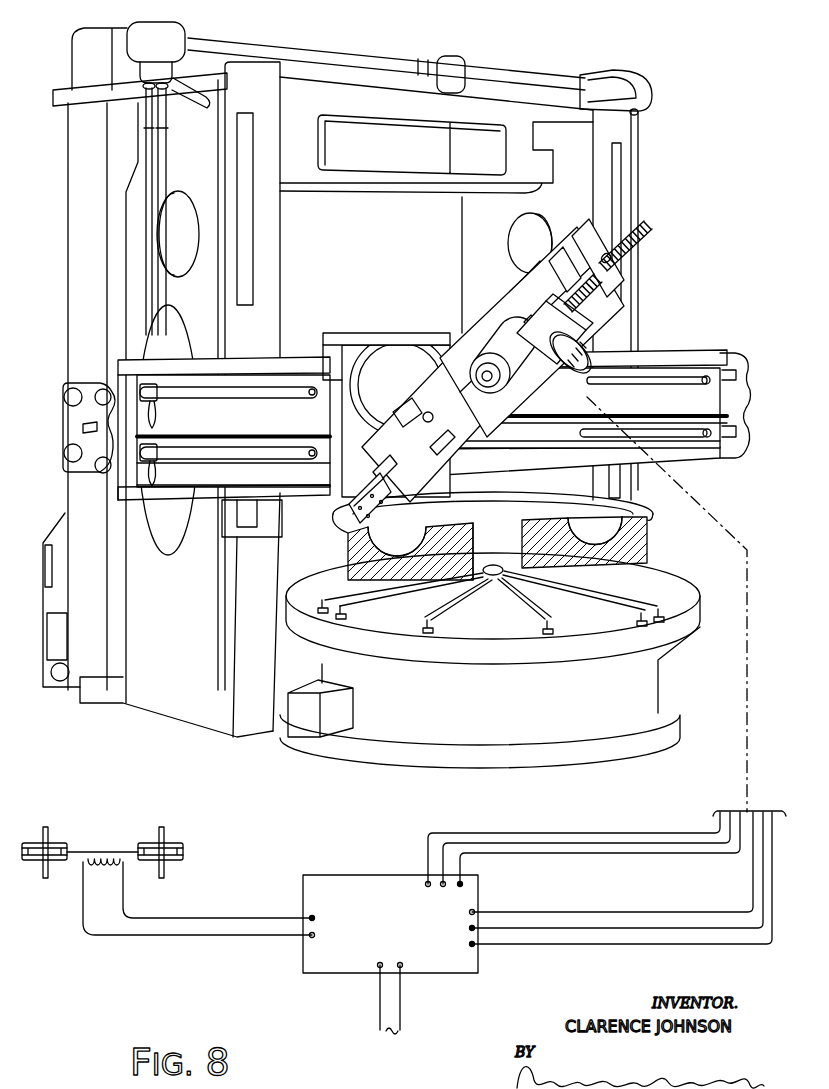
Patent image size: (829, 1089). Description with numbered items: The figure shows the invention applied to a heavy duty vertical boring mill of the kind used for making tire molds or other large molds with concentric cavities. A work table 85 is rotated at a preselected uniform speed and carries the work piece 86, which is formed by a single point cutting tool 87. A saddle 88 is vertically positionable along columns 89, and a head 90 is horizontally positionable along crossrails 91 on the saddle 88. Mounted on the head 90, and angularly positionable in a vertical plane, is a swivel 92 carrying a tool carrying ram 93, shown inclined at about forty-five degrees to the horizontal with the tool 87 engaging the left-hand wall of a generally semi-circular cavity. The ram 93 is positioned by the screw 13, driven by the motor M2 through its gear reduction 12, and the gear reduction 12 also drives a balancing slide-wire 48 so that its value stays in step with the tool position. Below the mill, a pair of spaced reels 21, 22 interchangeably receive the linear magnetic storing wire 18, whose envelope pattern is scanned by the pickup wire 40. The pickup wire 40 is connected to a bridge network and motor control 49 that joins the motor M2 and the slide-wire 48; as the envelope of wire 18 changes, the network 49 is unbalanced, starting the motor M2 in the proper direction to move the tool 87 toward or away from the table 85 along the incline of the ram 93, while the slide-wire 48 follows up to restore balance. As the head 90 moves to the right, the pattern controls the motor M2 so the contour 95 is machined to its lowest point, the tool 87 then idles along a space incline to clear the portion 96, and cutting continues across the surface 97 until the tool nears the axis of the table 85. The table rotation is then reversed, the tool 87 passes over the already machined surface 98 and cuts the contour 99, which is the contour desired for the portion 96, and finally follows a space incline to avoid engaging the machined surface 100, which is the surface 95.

The columns 89 is at (283, 121).
The screw 13 is at (643, 240).
The gear reduction 12 is at (555, 329).
The balancing slide-wire 48 is at (583, 348).
The motor M2 is at (505, 354).
The crossrails 91 is at (673, 350).
The saddle 88 is at (583, 408).
The head 90 is at (198, 430).
The swivel 92 is at (386, 415).
The tool carrying ram 93 is at (493, 364).
The single point cutting tool 87 is at (379, 496).
The work piece 86 is at (513, 513).
The work table 85 is at (490, 660).
The contour 95 is at (380, 548).
The portion of the work piece 96 is at (420, 560).
The surface 97 is at (440, 553).
The machined surface 98 is at (584, 542).
The contour 99 is at (595, 516).
The machined surface 100 is at (628, 528).
The reel 21 is at (30, 840).
The reel 22 is at (170, 840).
The wire 18 is at (90, 848).
The pickup wire 40 is at (197, 897).
The bridge network and motor control 49 is at (544, 922).